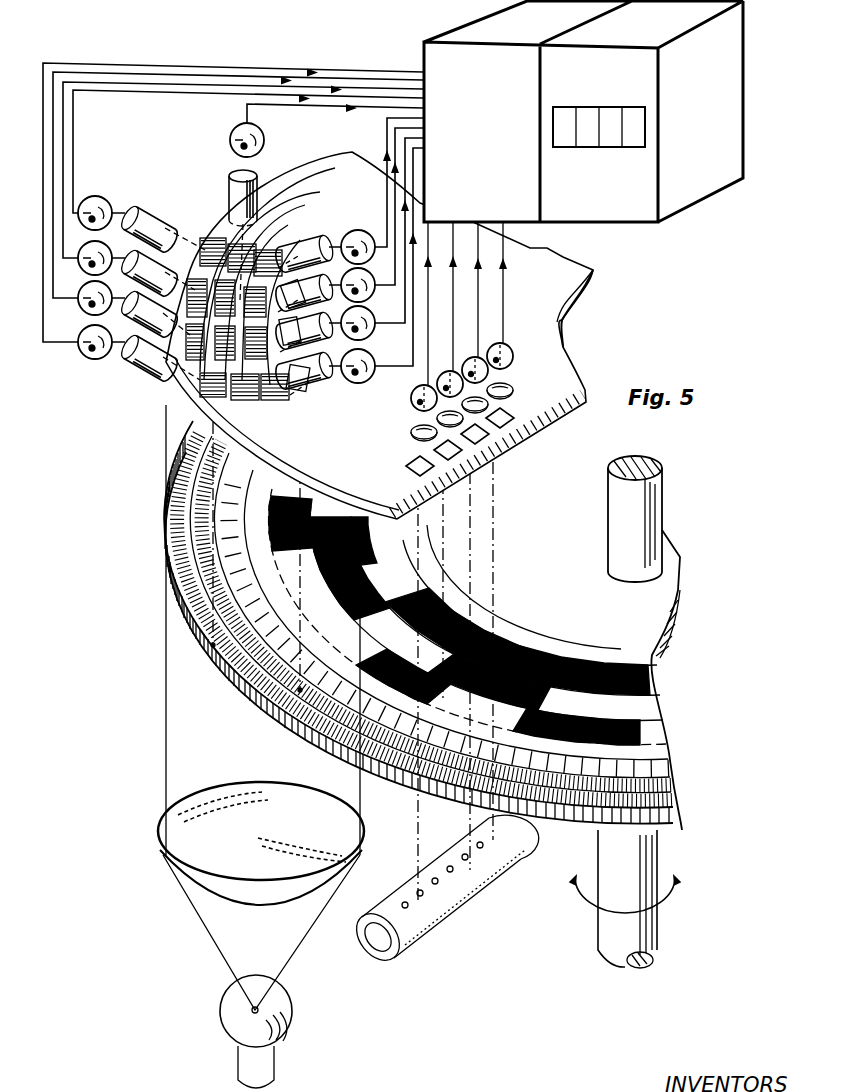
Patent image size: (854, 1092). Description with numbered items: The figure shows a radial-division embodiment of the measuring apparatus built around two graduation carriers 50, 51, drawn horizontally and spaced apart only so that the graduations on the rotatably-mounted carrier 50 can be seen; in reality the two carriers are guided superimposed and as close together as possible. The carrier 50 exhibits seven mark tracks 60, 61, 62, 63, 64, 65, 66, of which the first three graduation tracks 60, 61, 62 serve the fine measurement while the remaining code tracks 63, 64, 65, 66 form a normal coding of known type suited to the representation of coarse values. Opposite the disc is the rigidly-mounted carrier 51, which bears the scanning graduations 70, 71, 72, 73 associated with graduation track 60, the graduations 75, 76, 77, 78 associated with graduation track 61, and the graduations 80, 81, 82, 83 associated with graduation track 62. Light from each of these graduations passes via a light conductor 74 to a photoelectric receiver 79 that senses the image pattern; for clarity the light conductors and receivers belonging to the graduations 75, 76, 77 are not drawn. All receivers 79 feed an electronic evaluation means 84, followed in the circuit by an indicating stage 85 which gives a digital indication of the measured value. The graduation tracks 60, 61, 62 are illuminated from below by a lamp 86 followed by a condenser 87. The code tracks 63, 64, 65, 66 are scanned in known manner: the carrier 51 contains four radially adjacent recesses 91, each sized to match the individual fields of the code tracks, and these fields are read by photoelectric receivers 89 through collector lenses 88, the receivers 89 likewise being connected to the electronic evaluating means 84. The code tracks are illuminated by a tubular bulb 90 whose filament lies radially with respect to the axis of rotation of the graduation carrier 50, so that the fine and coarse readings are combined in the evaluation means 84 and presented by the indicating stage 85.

The graduation carrier 50 is at (215, 675).
The graduation carrier 51 is at (560, 340).
The graduation track 60 is at (672, 798).
The graduation track 61 is at (668, 772).
The graduation track 62 is at (664, 752).
The code track 63 is at (658, 732).
The code track 64 is at (648, 713).
The code track 65 is at (648, 693).
The code track 66 is at (655, 670).
The graduation 70 is at (222, 390).
The graduation 71 is at (213, 367).
The graduation 72 is at (178, 310).
The graduation 73 is at (214, 244).
The light conductor 74 is at (133, 212).
The graduation 75 is at (252, 395).
The graduation 76 is at (236, 398).
The graduation 77 is at (296, 208).
The graduation 78 is at (266, 232).
The photoelectric receiver 79 is at (230, 140).
The graduation 80 is at (284, 396).
The graduation 81 is at (288, 405).
The graduation 82 is at (330, 395).
The graduation 83 is at (282, 250).
The electronic evaluation means 84 is at (436, 60).
The indicating stage 85 is at (642, 208).
The lamp 86 is at (222, 1012).
The condenser 87 is at (222, 825).
The collector lens 88 is at (513, 390).
The photoelectric receiver 89 is at (505, 342).
The tubular bulb 90 is at (466, 905).
The recess 91 is at (514, 420).